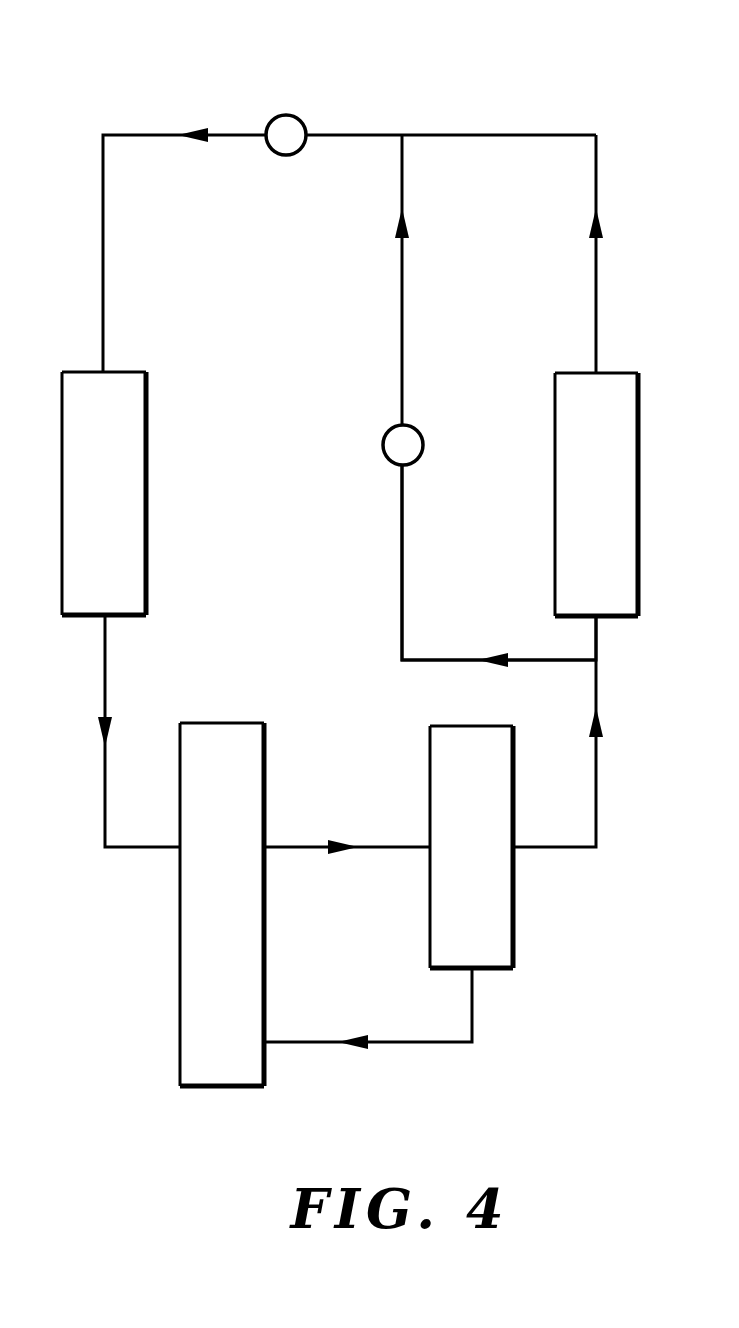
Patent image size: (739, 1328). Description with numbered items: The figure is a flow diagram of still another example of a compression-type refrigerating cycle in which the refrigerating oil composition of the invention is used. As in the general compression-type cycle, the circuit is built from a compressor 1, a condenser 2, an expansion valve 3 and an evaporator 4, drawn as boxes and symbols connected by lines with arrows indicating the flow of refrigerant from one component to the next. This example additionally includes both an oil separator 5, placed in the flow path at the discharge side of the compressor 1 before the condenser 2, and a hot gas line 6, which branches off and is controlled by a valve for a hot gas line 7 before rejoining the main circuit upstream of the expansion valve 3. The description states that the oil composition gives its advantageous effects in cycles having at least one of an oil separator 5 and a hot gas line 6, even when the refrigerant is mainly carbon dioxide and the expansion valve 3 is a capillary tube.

The compressor 1 is at (222, 904).
The condenser 2 is at (596, 494).
The expansion valve 3 is at (303, 78).
The evaporator 4 is at (104, 493).
The oil separator 5 is at (471, 847).
The hot gas line 6 is at (499, 563).
The valve for a hot gas line 7 is at (380, 444).